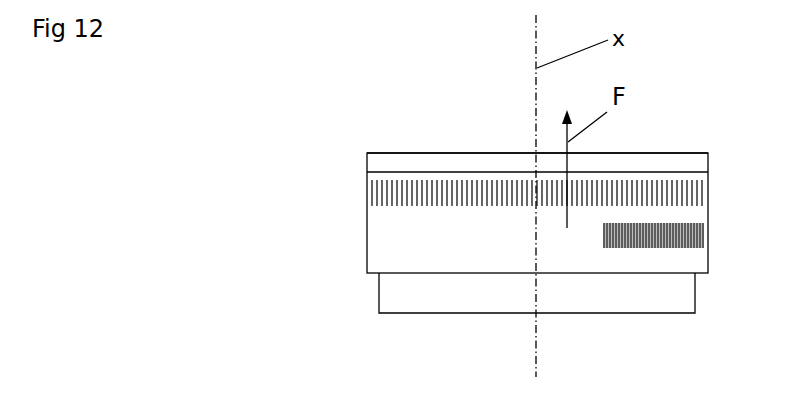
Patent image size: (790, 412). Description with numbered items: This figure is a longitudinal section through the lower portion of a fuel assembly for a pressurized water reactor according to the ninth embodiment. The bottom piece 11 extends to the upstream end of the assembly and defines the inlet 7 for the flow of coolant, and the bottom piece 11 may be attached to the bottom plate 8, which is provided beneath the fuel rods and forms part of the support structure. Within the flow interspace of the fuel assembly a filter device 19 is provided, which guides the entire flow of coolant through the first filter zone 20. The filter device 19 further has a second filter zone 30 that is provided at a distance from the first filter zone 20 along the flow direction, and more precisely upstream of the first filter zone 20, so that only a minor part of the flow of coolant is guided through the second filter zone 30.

The inlet 7 is at (508, 308).
The bottom plate 8 is at (415, 162).
The bottom piece 11 is at (365, 267).
The filter device 19 is at (487, 157).
The first filter zone 20 is at (398, 195).
The second filter zone 30 is at (615, 242).